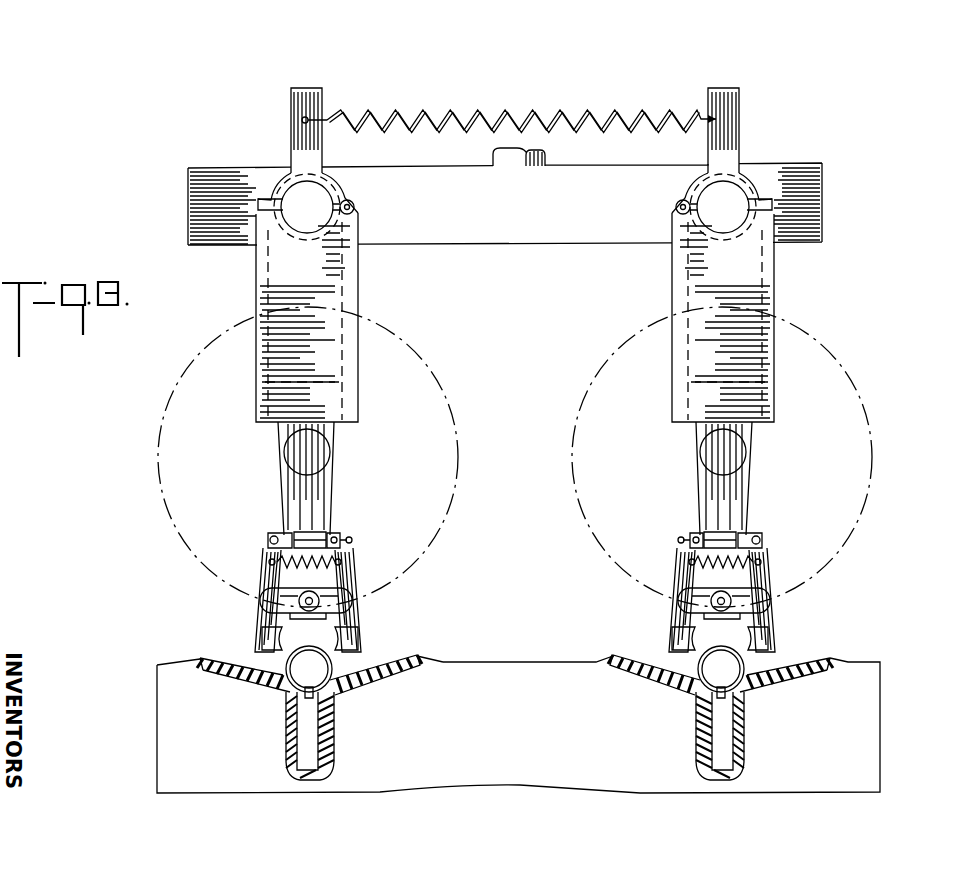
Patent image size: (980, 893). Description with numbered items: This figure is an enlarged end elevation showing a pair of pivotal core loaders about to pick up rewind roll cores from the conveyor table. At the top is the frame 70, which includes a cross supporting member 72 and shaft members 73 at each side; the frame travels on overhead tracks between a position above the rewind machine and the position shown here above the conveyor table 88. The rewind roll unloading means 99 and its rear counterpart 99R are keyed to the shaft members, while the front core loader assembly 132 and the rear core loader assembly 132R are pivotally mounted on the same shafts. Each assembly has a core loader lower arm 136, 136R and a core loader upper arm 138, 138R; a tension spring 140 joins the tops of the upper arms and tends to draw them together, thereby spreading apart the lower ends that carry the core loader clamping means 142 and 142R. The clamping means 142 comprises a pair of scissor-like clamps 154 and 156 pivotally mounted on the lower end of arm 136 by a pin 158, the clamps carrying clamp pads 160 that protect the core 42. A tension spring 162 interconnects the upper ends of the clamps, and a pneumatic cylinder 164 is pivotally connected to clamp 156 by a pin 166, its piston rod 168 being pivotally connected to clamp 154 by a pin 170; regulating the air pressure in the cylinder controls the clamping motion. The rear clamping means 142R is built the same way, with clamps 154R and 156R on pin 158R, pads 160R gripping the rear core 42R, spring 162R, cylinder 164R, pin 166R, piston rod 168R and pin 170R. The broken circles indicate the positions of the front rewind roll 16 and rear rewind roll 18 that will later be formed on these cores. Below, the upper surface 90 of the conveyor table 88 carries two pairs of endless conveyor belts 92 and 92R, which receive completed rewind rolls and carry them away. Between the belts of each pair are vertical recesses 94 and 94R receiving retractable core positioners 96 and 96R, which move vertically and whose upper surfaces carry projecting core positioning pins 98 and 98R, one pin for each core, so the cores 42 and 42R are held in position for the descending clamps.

The front rewind roll 16 is at (432, 440).
The rear rewind roll 18 is at (852, 433).
The core 42 is at (280, 443).
The rear core 42R is at (699, 449).
The frame 70 is at (836, 152).
The cross supporting member 72 is at (822, 222).
The shaft member 73 is at (330, 214).
The conveyor table 88 is at (556, 708).
The upper surface of the conveyor table 90 is at (553, 670).
The conveyor belts 92 is at (257, 690).
The rear conveyor belts 92R is at (623, 657).
The vertical recess 94 is at (325, 752).
The rear vertical recess 94R is at (745, 749).
The retractable core positioner 96 is at (312, 717).
The rear retractable core positioner 96R is at (728, 718).
The core positioning pin 98 is at (301, 696).
The rear core positioning pin 98R is at (714, 696).
The rewind roll unloading means 99 is at (340, 288).
The rear rewind roll unloading means 99R is at (752, 283).
The core loader assembly 132 is at (288, 463).
The rear core loader assembly 132R is at (770, 452).
The core loader lower arm 136 is at (333, 437).
The rear core loader lower arm 136R is at (742, 435).
The core loader upper arm 138 is at (291, 118).
The rear core loader upper arm 138R is at (740, 101).
The tension spring 140 is at (418, 113).
The core loader clamping means 142 is at (297, 561).
The rear core loader clamping means 142R is at (771, 561).
The clamp 154 is at (268, 575).
The rear clamp 154R is at (688, 574).
The clamp 156 is at (347, 572).
The rear clamp 156R is at (742, 590).
The pin 158 is at (348, 598).
The rear pin 158R is at (768, 595).
The clamp pads 160 is at (262, 638).
The rear clamp pads 160R is at (683, 627).
The tension spring 162 is at (334, 557).
The rear tension spring 162R is at (764, 556).
The pneumatic cylinder 164 is at (312, 533).
The rear pneumatic cylinder 164R is at (727, 533).
The pin 166 is at (334, 540).
The rear pin 166R is at (763, 545).
The piston rod 168 is at (280, 535).
The rear piston rod 168R is at (757, 538).
The pin 170 is at (270, 540).
The rear pin 170R is at (697, 540).